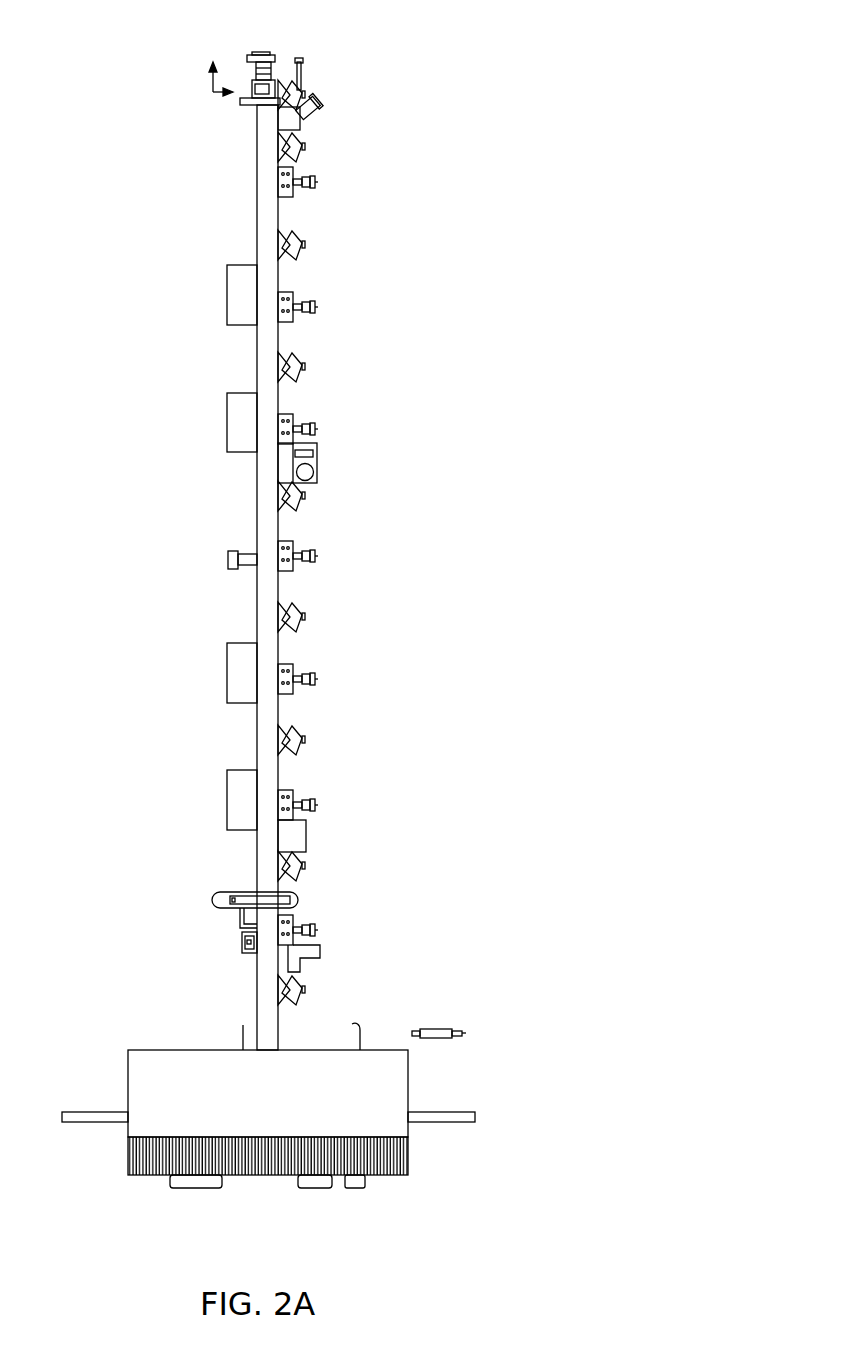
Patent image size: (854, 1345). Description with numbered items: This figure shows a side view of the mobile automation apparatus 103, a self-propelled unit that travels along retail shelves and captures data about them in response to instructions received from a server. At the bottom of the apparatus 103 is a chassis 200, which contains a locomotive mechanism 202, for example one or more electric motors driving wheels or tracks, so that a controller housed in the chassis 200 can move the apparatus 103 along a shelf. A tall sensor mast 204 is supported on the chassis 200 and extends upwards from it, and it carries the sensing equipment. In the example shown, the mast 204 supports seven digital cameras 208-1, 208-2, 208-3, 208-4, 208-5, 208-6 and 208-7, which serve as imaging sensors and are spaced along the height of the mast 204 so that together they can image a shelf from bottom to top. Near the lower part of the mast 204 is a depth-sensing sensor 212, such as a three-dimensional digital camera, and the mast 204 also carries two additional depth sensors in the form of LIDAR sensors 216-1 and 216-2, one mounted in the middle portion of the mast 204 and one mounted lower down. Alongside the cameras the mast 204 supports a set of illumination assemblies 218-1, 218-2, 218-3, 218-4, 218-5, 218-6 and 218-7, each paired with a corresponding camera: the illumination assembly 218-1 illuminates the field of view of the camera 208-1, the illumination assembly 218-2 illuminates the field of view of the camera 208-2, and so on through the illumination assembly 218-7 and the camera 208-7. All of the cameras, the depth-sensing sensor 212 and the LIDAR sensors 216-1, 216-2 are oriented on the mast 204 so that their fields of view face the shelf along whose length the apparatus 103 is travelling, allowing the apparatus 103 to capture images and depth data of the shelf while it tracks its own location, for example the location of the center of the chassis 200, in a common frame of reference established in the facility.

The mobile automation apparatus 103 is at (409, 35).
The chassis 200 is at (397, 1157).
The locomotive mechanism 202 is at (310, 1183).
The sensor mast 204 is at (265, 155).
The digital camera 208-1 is at (342, 183).
The digital camera 208-2 is at (342, 308).
The digital camera 208-3 is at (342, 430).
The digital camera 208-4 is at (342, 558).
The digital camera 208-5 is at (342, 681).
The digital camera 208-6 is at (342, 806).
The digital camera 208-7 is at (342, 932).
The depth-sensing sensor 212 is at (212, 897).
The LIDAR sensor 216-1 is at (317, 460).
The LIDAR sensor 216-2 is at (306, 823).
The illumination assembly 218-1 is at (337, 247).
The illumination assembly 218-2 is at (337, 369).
The illumination assembly 218-3 is at (337, 497).
The illumination assembly 218-4 is at (337, 619).
The illumination assembly 218-5 is at (337, 742).
The illumination assembly 218-6 is at (337, 867).
The illumination assembly 218-7 is at (337, 992).